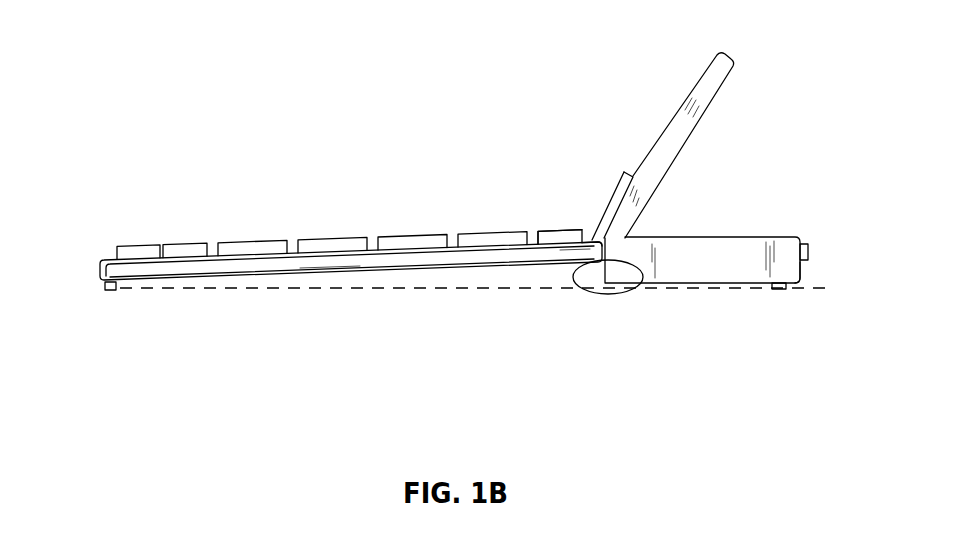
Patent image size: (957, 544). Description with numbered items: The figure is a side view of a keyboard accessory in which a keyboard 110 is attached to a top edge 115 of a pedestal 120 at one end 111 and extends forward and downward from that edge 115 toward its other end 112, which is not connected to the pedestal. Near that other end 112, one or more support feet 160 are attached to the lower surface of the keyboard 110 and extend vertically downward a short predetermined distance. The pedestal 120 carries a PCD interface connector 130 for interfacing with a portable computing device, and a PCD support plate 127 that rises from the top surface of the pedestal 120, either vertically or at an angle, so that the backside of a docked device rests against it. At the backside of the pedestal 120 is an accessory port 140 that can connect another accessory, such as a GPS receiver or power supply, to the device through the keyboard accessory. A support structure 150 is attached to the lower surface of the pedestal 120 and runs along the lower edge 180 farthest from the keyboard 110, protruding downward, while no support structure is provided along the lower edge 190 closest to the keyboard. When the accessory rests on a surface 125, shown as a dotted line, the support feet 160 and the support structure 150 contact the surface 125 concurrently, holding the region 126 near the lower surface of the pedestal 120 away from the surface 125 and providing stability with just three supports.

The keyboard 110 is at (247, 243).
The end 111 is at (571, 242).
The other end 112 is at (104, 260).
The top edge 115 is at (589, 233).
The pedestal 120 is at (657, 237).
The surface 125 is at (318, 291).
The region 126 is at (589, 294).
The PCD support plate 127 is at (736, 72).
The PCD interface connector 130 is at (627, 175).
The accessory port 140 is at (808, 252).
The support structure 150 is at (776, 290).
The support feet 160 is at (108, 292).
The lower edge 180 is at (800, 271).
The lower edge 190 is at (539, 242).